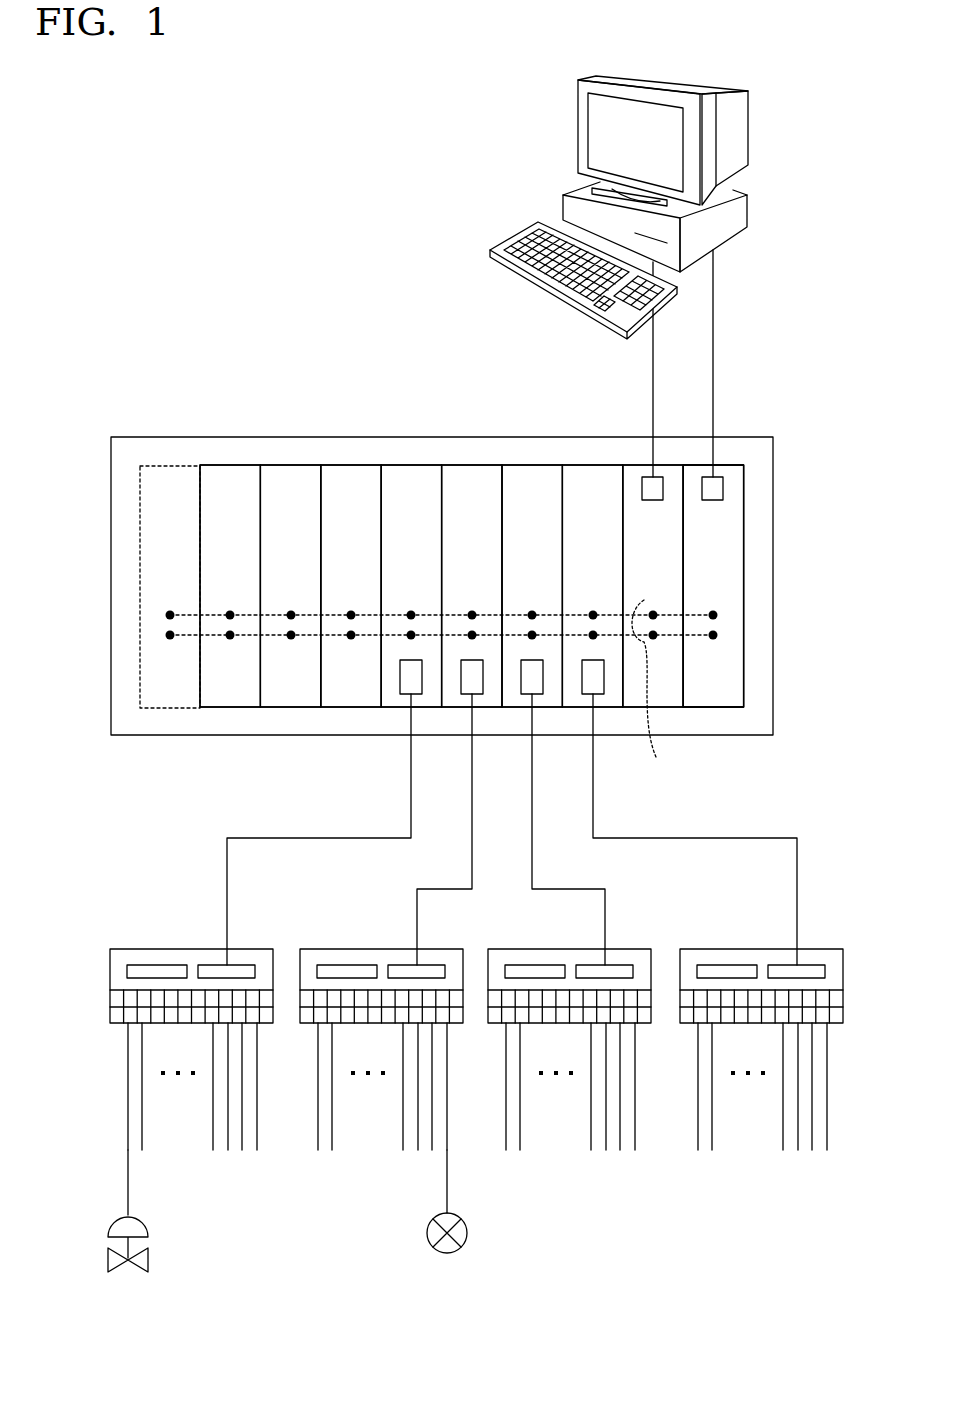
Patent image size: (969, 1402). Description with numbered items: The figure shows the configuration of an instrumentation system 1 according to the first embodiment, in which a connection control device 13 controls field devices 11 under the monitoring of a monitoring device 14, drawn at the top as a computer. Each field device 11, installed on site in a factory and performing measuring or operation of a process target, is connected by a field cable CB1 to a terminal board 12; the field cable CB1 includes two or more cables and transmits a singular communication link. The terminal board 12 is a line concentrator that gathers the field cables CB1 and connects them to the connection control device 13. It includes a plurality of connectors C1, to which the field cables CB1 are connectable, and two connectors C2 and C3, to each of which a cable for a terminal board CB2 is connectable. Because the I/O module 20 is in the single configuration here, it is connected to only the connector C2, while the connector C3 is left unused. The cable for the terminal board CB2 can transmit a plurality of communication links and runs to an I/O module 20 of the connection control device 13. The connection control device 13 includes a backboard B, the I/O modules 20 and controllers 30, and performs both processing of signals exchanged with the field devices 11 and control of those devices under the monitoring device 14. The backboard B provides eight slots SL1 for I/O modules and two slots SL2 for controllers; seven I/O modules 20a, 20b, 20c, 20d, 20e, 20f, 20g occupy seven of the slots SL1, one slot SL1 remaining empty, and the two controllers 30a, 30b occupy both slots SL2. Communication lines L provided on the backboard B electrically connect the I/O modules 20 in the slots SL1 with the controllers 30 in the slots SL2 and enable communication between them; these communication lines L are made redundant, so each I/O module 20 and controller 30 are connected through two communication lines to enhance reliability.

The instrumentation system 1 is at (227, 130).
The field device 11 is at (150, 1260).
The terminal board 12 is at (190, 949).
The connection control device 13 is at (801, 466).
The monitoring device 14 is at (697, 85).
The I/O module 20 is at (622, 383).
The I/O module 20a is at (592, 465).
The I/O module 20b is at (531, 465).
The I/O module 20c is at (471, 465).
The I/O module 20d is at (410, 465).
The I/O module 20e is at (350, 465).
The I/O module 20f is at (290, 465).
The I/O module 20g is at (229, 465).
The controller 30 is at (867, 350).
The controller 30a is at (728, 463).
The controller 30b is at (668, 463).
The backboard B is at (773, 625).
The communication line L is at (655, 688).
The slot SL1 is at (140, 521).
The slot SL2 is at (745, 518).
The connector C1 is at (281, 1037).
The connector C2 is at (240, 963).
The connector C3 is at (143, 963).
The field cable CB1 is at (127, 1181).
The cable for a terminal board CB2 is at (411, 815).